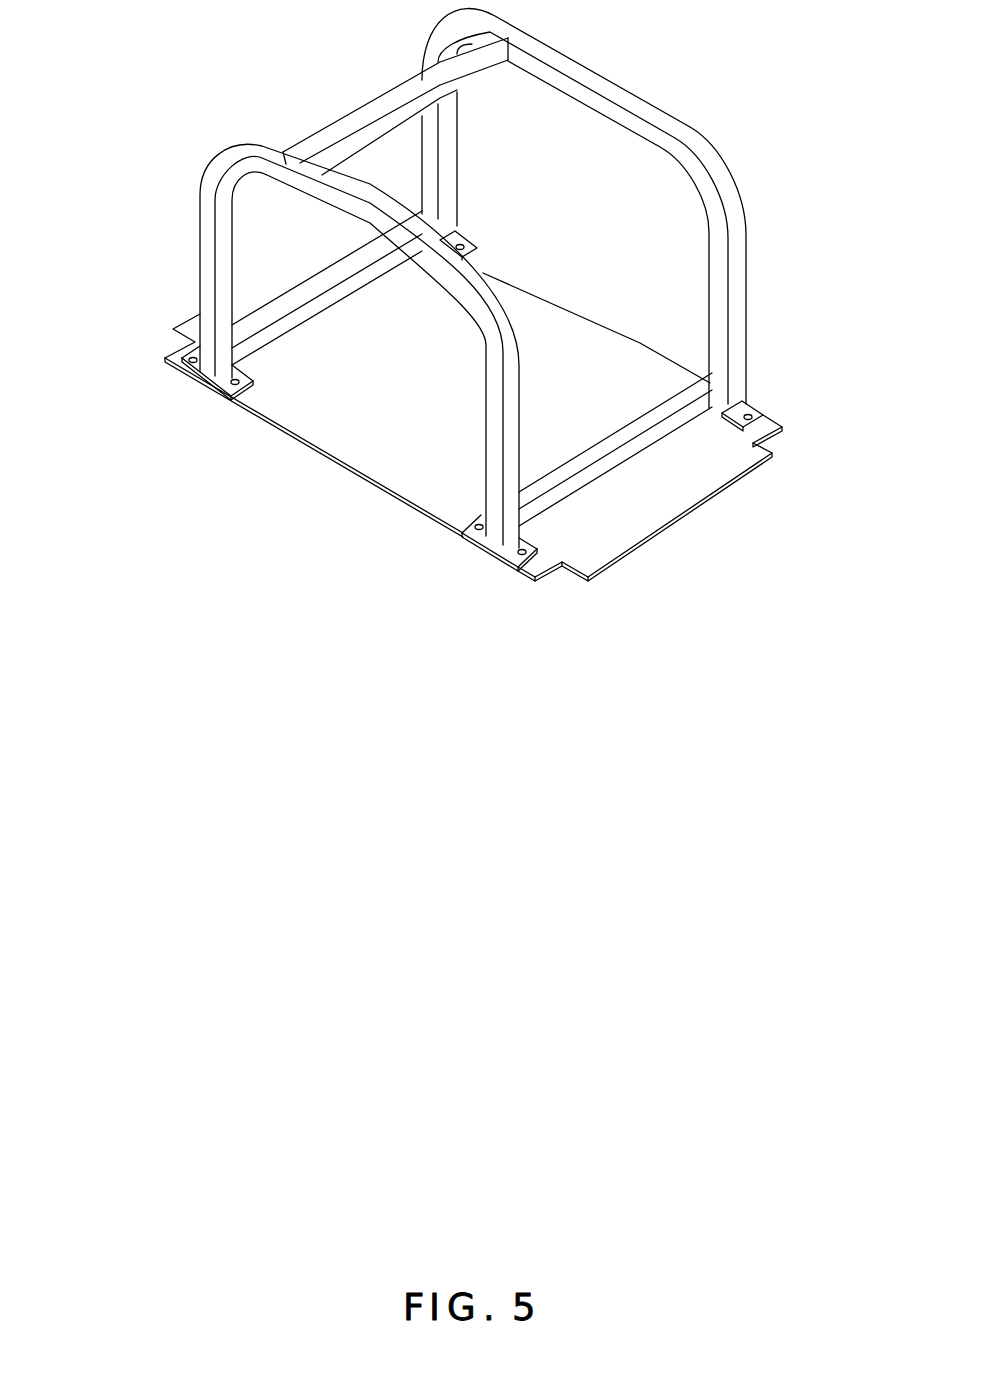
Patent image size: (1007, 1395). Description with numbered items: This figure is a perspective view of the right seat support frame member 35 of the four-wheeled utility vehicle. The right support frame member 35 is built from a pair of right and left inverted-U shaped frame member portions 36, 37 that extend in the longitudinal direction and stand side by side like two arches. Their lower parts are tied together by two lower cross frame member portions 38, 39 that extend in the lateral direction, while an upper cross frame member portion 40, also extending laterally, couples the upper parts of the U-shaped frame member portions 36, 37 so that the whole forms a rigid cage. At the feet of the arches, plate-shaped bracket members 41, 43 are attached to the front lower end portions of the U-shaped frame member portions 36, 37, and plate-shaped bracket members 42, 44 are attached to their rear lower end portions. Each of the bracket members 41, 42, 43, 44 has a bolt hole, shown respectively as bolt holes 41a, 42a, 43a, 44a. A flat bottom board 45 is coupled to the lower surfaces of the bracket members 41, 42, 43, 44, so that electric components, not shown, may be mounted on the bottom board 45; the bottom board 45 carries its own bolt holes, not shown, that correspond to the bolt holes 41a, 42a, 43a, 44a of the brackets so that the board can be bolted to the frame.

The right seat support frame member 35 is at (219, 137).
The inverted-U shaped frame member portion 36 is at (500, 292).
The inverted-U shaped frame member portion 37 is at (692, 127).
The lower cross frame member portion 38 is at (663, 402).
The lower cross frame member portion 39 is at (298, 290).
The upper cross frame member portion 40 is at (380, 98).
The plate-shaped bracket member 41 is at (463, 535).
The bolt hole 41a is at (521, 554).
The plate-shaped bracket member 42 is at (224, 394).
The bolt hole 42a is at (232, 383).
The plate-shaped bracket member 43 is at (758, 410).
The bolt hole 43a is at (752, 416).
The plate-shaped bracket member 44 is at (460, 242).
The bolt hole 44a is at (465, 250).
The flat bottom board 45 is at (360, 469).